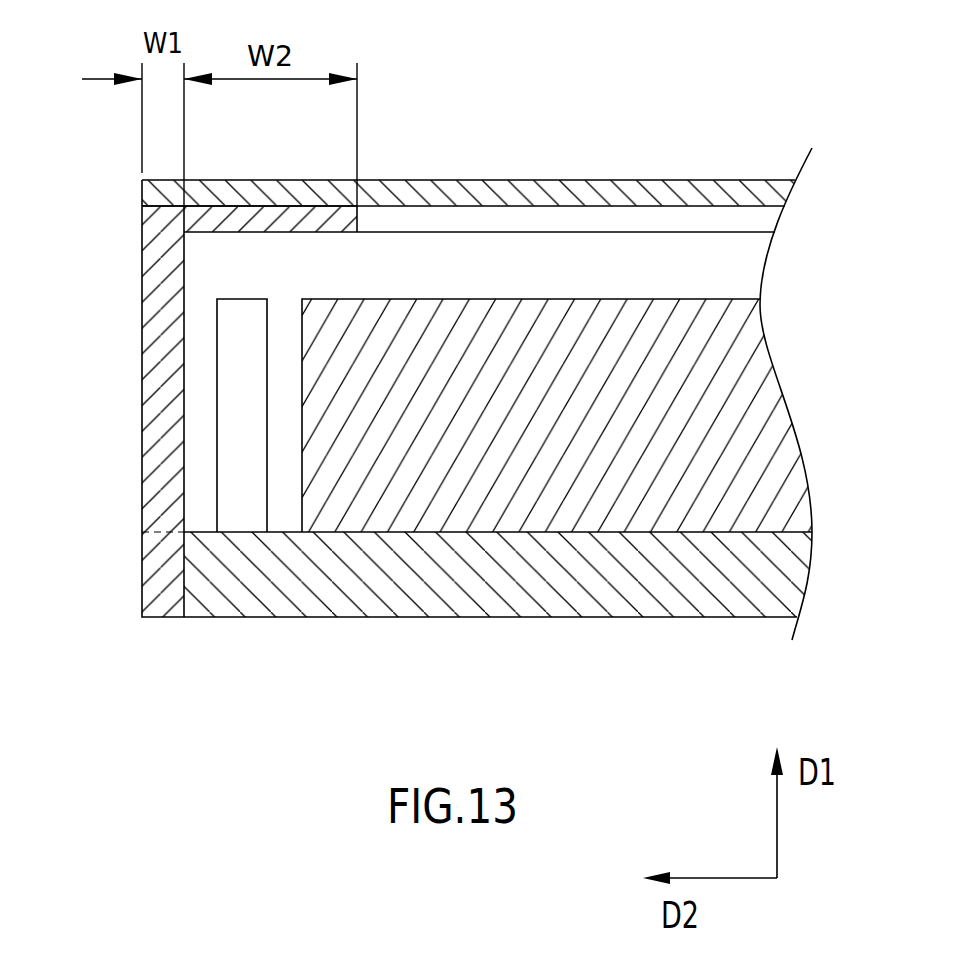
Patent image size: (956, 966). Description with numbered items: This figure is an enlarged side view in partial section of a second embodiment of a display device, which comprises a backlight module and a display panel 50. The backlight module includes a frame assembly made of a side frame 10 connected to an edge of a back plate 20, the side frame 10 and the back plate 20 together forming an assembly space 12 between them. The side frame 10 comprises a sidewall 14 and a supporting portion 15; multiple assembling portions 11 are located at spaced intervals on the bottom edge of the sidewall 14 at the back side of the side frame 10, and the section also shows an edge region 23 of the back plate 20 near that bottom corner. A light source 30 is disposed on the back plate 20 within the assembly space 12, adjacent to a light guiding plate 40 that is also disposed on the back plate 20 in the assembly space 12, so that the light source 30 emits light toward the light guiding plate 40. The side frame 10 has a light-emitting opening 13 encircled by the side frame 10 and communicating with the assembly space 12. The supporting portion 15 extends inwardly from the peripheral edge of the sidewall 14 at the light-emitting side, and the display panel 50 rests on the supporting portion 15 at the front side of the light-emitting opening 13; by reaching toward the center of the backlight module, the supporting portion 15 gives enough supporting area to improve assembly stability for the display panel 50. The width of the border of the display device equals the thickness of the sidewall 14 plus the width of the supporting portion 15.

The side frame 10 is at (130, 282).
The assembling portions 11 is at (157, 582).
The assembly space 12 is at (211, 278).
The light-emitting opening 13 is at (357, 218).
The sidewall 14 is at (158, 450).
The supporting portion 15 is at (295, 217).
The back plate 20 is at (470, 624).
The corner 23 is at (185, 597).
The light source 30 is at (235, 392).
The light guiding plate 40 is at (580, 322).
The display panel 50 is at (480, 192).